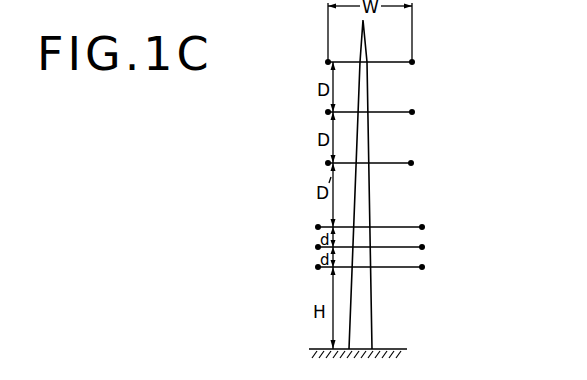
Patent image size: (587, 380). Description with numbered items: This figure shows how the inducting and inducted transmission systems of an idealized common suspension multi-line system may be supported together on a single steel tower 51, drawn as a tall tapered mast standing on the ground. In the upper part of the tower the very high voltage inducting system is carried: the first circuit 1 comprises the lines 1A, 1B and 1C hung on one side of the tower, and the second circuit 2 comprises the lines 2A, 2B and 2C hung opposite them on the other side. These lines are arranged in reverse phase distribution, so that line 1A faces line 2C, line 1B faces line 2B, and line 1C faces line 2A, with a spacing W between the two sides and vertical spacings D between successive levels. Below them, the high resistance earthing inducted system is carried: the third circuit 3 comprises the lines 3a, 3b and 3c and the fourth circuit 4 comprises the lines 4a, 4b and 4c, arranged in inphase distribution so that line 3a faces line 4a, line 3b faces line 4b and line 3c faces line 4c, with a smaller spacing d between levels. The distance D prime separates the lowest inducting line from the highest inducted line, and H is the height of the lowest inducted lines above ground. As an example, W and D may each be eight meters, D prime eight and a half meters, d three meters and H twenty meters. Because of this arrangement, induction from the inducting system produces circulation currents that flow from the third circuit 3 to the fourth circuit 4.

The first circuit 1 is at (329, 112).
The very high voltage transmission line 1A is at (352, 62).
The very high voltage transmission line 1B is at (352, 112).
The very high voltage transmission line 1C is at (352, 163).
The second circuit 2 is at (453, 112).
The very high voltage transmission line 2A is at (425, 163).
The very high voltage transmission line 2B is at (426, 112).
The very high voltage transmission line 2C is at (427, 62).
The third circuit 3 is at (333, 246).
The high resistance earthing system transmission line 3a is at (354, 226).
The high resistance earthing system transmission line 3b is at (354, 246).
The high resistance earthing system transmission line 3c is at (354, 266).
The fourth circuit 4 is at (456, 247).
The high resistance earthing system transmission line 4a is at (435, 227).
The high resistance earthing system transmission line 4b is at (435, 247).
The high resistance earthing system transmission line 4c is at (434, 267).
The steel tower 51 is at (366, 56).